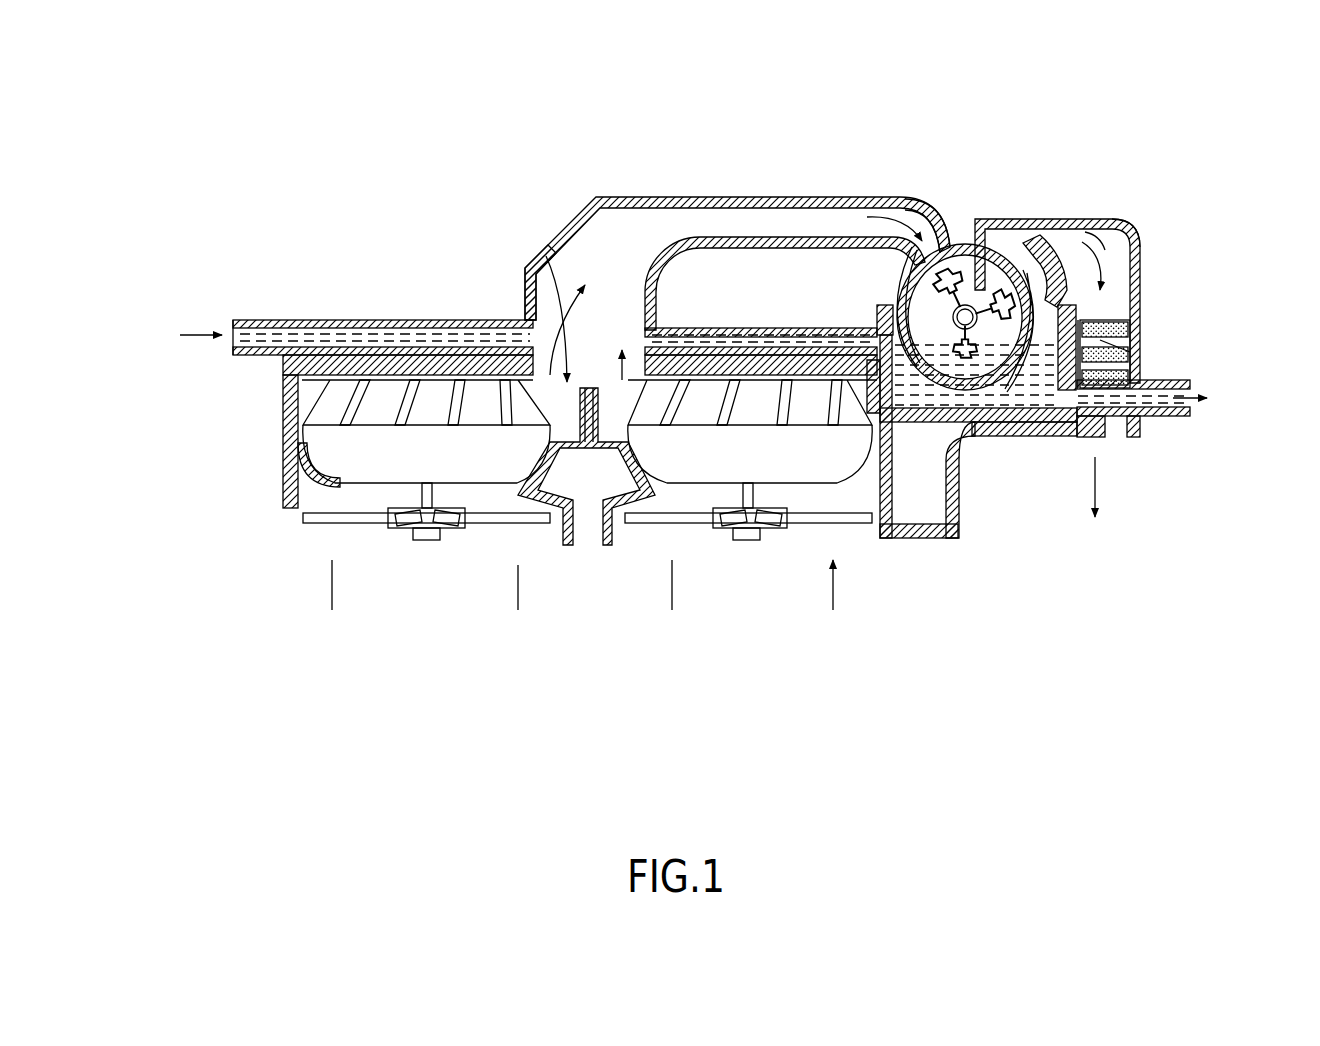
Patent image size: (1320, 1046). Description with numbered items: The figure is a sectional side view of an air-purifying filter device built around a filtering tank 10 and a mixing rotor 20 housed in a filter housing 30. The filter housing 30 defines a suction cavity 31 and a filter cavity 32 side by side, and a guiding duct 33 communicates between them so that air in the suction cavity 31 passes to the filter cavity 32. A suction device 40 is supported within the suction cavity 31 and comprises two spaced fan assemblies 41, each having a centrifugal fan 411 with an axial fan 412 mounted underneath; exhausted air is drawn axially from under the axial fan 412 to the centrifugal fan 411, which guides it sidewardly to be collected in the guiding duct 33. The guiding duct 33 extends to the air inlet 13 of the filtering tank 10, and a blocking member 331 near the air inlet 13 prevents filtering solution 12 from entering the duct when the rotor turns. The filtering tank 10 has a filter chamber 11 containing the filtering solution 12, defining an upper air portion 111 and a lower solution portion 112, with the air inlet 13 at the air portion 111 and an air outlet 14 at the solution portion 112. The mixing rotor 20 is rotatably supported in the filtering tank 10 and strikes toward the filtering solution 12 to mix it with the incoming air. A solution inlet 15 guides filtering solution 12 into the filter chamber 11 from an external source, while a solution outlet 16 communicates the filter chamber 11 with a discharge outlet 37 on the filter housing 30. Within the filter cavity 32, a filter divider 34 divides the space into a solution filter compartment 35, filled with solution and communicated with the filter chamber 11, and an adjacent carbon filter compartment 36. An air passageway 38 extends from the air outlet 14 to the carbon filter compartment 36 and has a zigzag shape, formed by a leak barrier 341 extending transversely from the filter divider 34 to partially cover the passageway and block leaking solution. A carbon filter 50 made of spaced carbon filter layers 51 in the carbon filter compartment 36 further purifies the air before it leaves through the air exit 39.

The filtering tank 10 is at (1003, 247).
The filter chamber 11 is at (938, 393).
The air portion 111 is at (1100, 242).
The solution portion 112 is at (960, 395).
The filtering solution 12 is at (748, 343).
The air inlet 13 is at (962, 223).
The air outlet 14 is at (985, 397).
The solution inlet 15 is at (868, 349).
The solution outlet 16 is at (958, 367).
The mixing rotor 20 is at (923, 242).
The filter housing 30 is at (1140, 288).
The suction cavity 31 is at (540, 245).
The filter cavity 32 is at (1118, 232).
The guiding duct 33 is at (600, 197).
The blocking member 331 is at (932, 243).
The filter divider 34 is at (1133, 387).
The leak barrier 341 is at (1040, 275).
The solution filter compartment 35 is at (1042, 397).
The carbon filter compartment 36 is at (1107, 305).
The discharge outlet 37 is at (1213, 403).
The air passageway 38 is at (1082, 242).
The air exit 39 is at (1113, 447).
The suction device 40 is at (232, 518).
The fan assembly 41 is at (432, 560).
The centrifugal fan 411 is at (373, 452).
The axial fan 412 is at (380, 520).
The carbon filter 50 is at (1147, 350).
The carbon filter layer 51 is at (1097, 387).